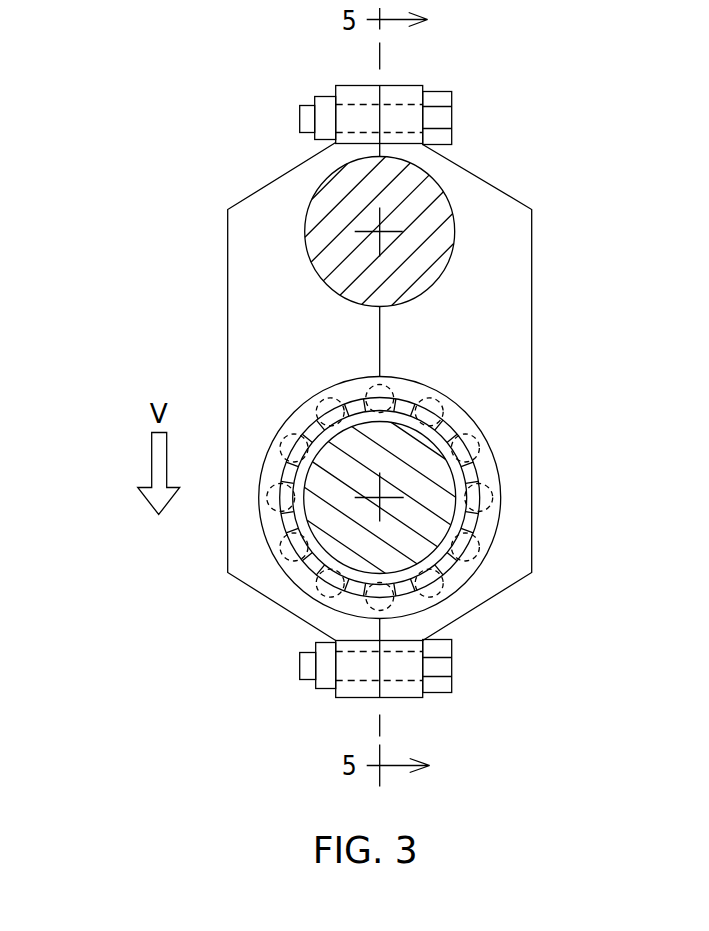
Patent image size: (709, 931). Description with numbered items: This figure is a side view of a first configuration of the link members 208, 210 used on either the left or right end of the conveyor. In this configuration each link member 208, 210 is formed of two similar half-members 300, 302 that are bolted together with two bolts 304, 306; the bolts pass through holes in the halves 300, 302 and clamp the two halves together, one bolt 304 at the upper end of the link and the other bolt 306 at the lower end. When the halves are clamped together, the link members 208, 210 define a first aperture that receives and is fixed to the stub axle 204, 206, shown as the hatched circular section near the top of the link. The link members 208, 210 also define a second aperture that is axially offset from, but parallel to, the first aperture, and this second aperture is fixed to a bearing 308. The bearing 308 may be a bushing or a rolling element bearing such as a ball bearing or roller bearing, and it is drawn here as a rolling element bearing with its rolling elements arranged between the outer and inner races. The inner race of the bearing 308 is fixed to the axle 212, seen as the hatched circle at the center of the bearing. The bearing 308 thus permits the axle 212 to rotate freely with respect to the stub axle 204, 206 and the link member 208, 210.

The half-member 300 is at (260, 330).
The stub axle 204 is at (425, 226).
The stub axle 206 is at (380, 232).
The link member 208 is at (511, 327).
The link member 210 is at (426, 392).
The axle 212 is at (417, 512).
The half-member 302 is at (503, 383).
The bolt 304 is at (443, 120).
The bolt 306 is at (443, 666).
The bearing 308 is at (470, 437).